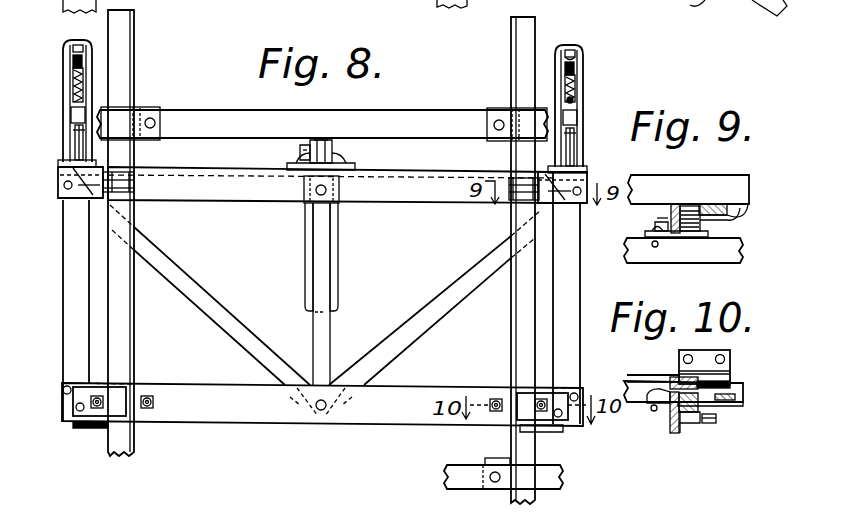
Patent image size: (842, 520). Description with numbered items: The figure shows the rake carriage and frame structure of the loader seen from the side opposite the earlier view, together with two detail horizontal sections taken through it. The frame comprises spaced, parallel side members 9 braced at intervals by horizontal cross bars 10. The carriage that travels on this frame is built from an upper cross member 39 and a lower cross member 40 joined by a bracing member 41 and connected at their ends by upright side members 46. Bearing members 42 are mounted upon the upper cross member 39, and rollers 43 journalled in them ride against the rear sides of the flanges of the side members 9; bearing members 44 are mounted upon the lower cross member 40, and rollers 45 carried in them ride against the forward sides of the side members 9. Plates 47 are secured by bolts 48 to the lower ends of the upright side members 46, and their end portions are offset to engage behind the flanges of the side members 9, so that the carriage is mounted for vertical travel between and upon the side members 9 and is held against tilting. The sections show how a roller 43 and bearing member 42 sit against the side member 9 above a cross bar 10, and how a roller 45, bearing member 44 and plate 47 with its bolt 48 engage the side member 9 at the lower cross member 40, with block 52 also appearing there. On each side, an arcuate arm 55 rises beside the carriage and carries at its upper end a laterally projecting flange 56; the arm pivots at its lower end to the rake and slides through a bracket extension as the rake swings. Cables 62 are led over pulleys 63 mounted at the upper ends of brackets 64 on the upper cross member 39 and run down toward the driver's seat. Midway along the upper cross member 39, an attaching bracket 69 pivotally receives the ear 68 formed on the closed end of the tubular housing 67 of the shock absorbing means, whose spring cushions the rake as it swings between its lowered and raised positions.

In FIG. 8, the side members 9 is at (121, 306).
In FIG. 9, the side members 9 is at (672, 212).
In FIG. 10, the side members 9 is at (679, 424).
In FIG. 8, the horizontal cross bars 10 is at (200, 117).
In FIG. 9, the horizontal cross bars 10 is at (715, 256).
In FIG. 8, the upper cross member 39 is at (401, 206).
In FIG. 9, the upper cross member 39 is at (665, 188).
In FIG. 8, the lower cross member 40 is at (378, 388).
In FIG. 10, the lower cross member 40 is at (743, 382).
In FIG. 8, the bracing member 41 is at (376, 352).
In FIG. 8, the bearing members 42 is at (88, 192).
In FIG. 9, the bearing members 42 is at (730, 215).
In FIG. 8, the rollers 43 is at (124, 200).
In FIG. 9, the rollers 43 is at (690, 207).
In FIG. 10, the bearing members 44 is at (671, 407).
In FIG. 10, the rollers 45 is at (678, 378).
In FIG. 8, the upright side members 46 is at (70, 304).
In FIG. 9, the upright side members 46 is at (720, 204).
In FIG. 8, the plates 47 is at (118, 393).
In FIG. 10, the plates 47 is at (692, 422).
In FIG. 8, the bolts 48 is at (94, 413).
In FIG. 10, the bolts 48 is at (711, 420).
In FIG. 8, the block 52 is at (99, 432).
In FIG. 10, the block 52 is at (722, 374).
In FIG. 8, the arcuate arm 55 is at (73, 146).
In FIG. 8, the laterally projecting flange 56 is at (71, 115).
In FIG. 8, the cables 62 is at (74, 88).
In FIG. 8, the pulleys 63 is at (73, 65).
In FIG. 8, the brackets 64 is at (76, 44).
In FIG. 8, the tubular housing 67 is at (338, 252).
In FIG. 8, the ear 68 is at (334, 153).
In FIG. 8, the attaching bracket 69 is at (315, 140).